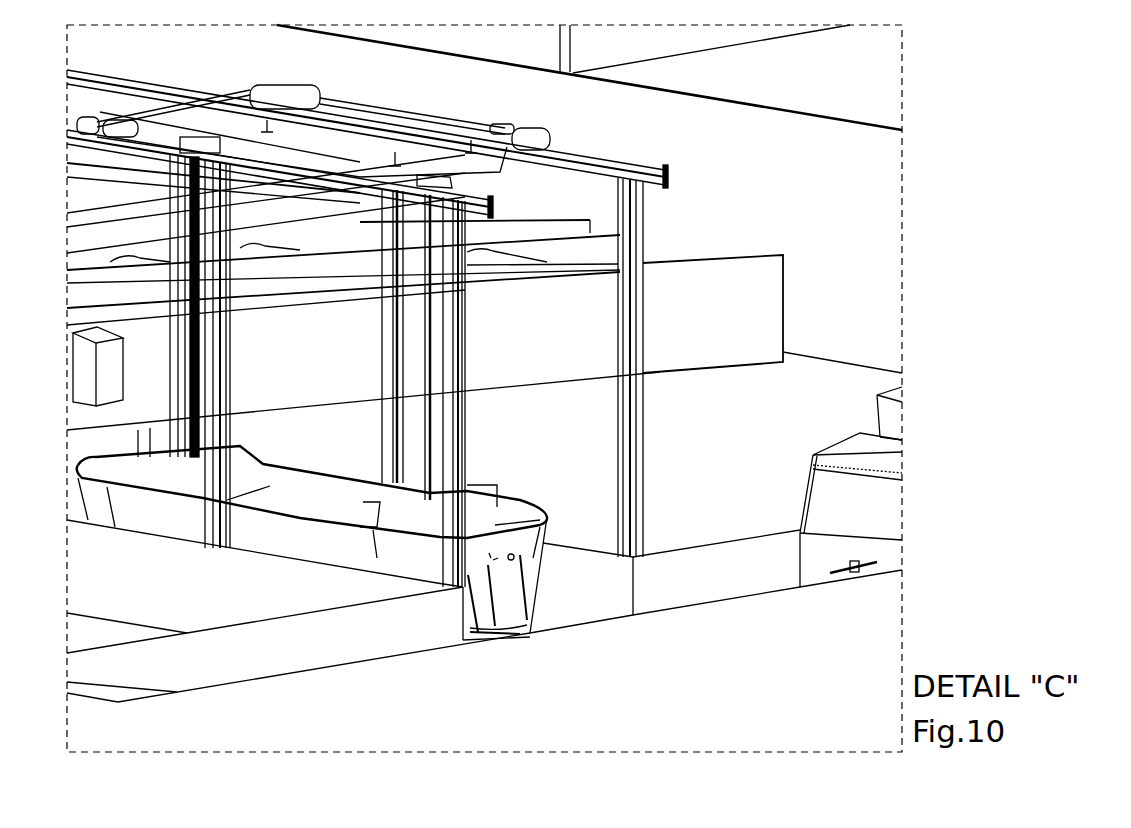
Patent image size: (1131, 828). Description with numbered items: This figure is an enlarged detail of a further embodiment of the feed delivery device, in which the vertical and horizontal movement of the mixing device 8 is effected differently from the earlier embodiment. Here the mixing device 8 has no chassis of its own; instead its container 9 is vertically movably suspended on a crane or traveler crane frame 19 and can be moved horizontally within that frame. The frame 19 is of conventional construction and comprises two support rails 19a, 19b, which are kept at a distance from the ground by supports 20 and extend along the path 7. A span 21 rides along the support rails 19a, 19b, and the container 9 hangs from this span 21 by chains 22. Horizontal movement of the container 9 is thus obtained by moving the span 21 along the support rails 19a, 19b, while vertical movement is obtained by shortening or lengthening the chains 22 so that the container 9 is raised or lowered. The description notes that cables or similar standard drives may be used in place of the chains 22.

The path 7 is at (590, 567).
The mixing device 8 is at (688, 447).
The container 9 is at (525, 543).
The traveler crane frame 19 is at (735, 197).
The support rail 19a is at (635, 163).
The support rail 19b is at (493, 205).
The support 20 is at (645, 357).
The span 21 is at (438, 160).
The chains 22 is at (197, 367).